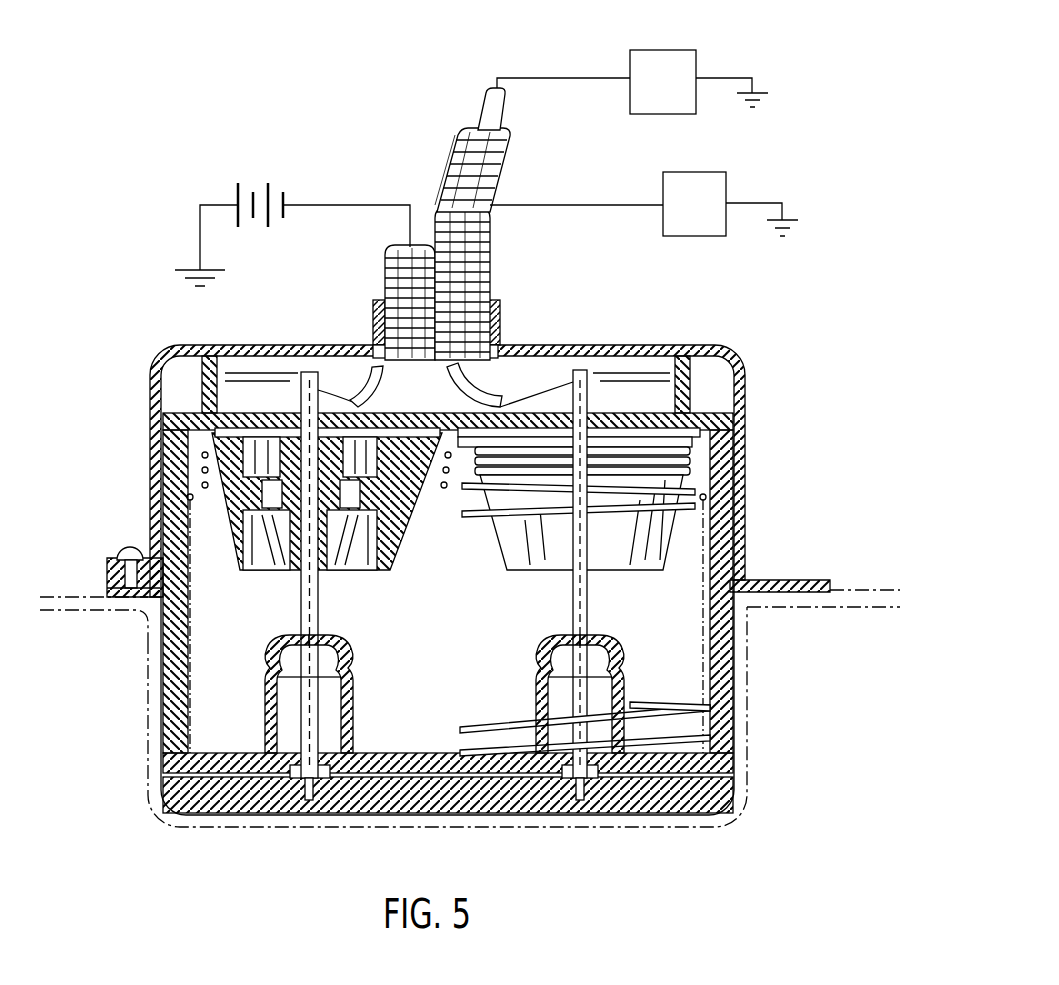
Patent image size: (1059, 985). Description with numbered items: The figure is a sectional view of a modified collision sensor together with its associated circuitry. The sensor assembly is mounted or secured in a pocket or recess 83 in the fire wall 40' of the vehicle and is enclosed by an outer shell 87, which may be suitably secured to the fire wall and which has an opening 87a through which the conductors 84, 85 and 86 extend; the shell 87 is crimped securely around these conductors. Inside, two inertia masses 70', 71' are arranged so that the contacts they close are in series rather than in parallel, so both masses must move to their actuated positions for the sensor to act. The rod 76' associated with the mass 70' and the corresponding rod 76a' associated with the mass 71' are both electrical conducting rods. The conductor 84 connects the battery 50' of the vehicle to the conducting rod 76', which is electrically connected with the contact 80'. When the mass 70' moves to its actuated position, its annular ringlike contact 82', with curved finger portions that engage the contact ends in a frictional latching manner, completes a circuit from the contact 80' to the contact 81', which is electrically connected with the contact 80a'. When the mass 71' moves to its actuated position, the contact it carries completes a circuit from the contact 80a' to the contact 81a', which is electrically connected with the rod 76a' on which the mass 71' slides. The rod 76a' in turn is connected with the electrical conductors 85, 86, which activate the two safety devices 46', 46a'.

The fire wall 40' is at (470, 589).
The pocket or recess 83 is at (750, 706).
The outer shell 87 is at (686, 351).
The opening 87a is at (484, 331).
The mass 70' is at (275, 499).
The contact 82' is at (297, 555).
The rod 76' is at (333, 586).
The rod 76a' is at (585, 585).
The contact 80' is at (263, 690).
The contact 81' is at (358, 685).
The contact 80a' is at (535, 682).
The contact 81a' is at (644, 689).
The mass 71' is at (627, 499).
The conductor 84 is at (385, 277).
The conductor 85 is at (480, 282).
The conductor 86 is at (492, 165).
The battery 50' is at (292, 234).
The safety device 46' is at (699, 67).
The safety device 46a' is at (644, 188).